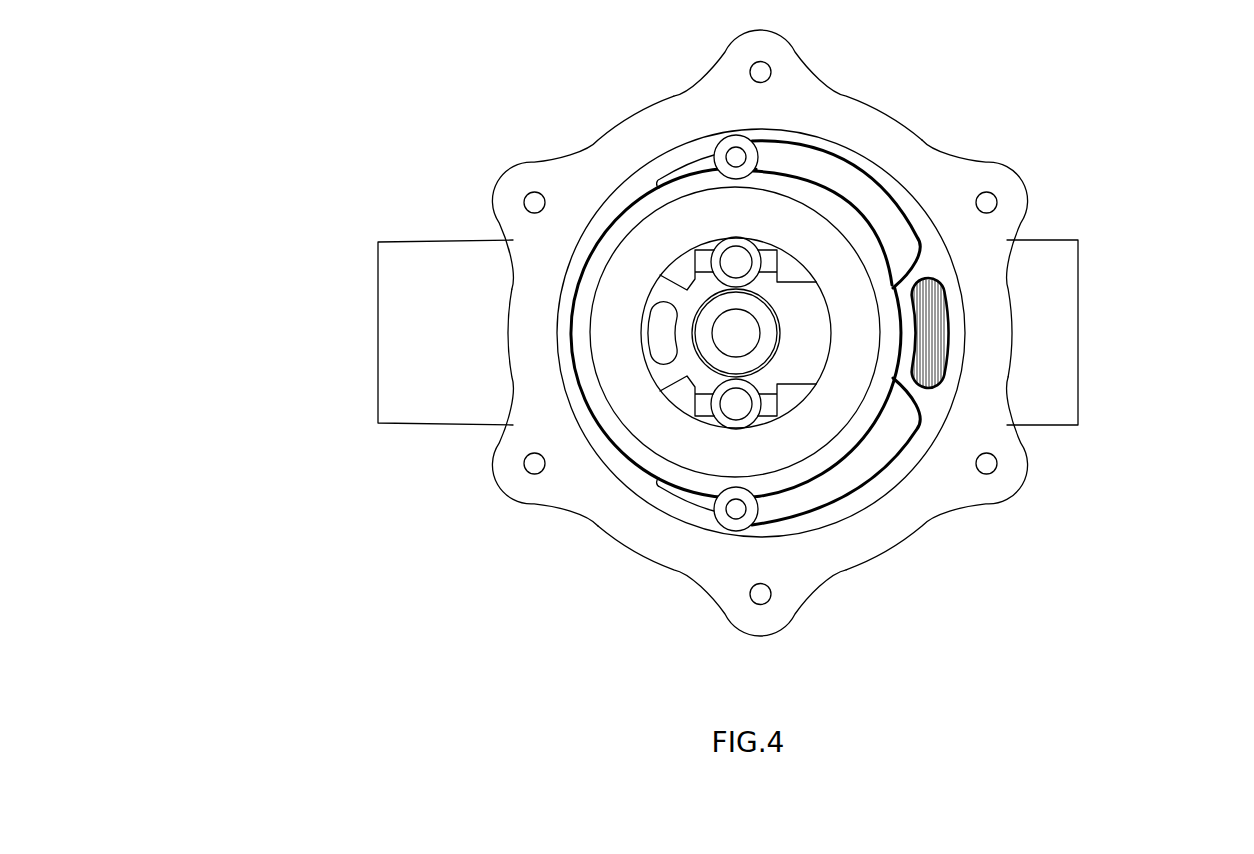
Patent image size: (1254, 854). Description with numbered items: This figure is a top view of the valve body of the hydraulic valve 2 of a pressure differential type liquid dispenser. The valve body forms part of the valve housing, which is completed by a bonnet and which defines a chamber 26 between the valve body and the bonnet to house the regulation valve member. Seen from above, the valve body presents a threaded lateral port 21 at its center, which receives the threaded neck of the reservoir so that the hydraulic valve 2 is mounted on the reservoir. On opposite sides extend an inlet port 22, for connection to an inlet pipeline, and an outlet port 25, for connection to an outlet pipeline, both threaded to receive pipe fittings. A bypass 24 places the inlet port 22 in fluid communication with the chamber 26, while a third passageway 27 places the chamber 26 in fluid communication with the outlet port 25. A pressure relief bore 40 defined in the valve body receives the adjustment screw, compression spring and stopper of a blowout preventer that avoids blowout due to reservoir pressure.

The hydraulic valve 2 is at (372, 598).
The lateral port 21 is at (735, 335).
The inlet port 22 is at (1096, 326).
The bypass 24 is at (933, 300).
The outlet port 25 is at (362, 337).
The chamber 26 is at (664, 218).
The third passageway 27 is at (663, 335).
The pressure relief bore 40 is at (740, 406).